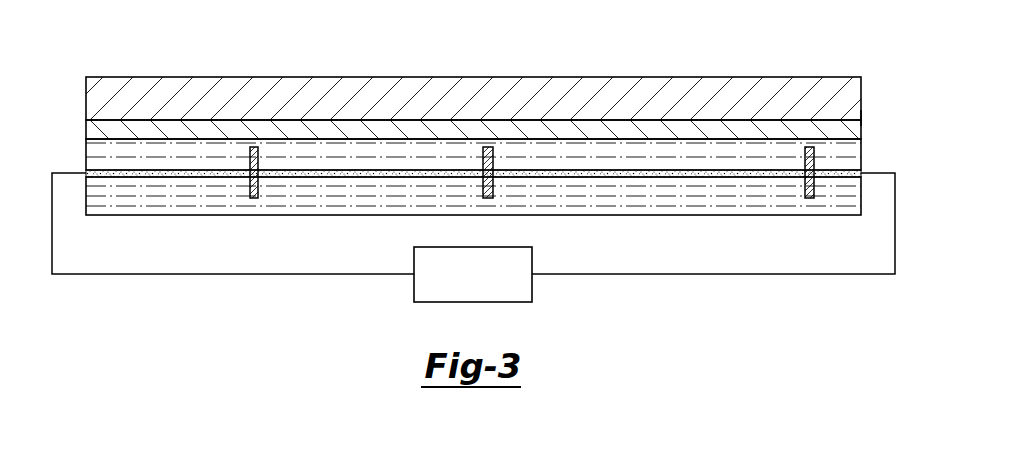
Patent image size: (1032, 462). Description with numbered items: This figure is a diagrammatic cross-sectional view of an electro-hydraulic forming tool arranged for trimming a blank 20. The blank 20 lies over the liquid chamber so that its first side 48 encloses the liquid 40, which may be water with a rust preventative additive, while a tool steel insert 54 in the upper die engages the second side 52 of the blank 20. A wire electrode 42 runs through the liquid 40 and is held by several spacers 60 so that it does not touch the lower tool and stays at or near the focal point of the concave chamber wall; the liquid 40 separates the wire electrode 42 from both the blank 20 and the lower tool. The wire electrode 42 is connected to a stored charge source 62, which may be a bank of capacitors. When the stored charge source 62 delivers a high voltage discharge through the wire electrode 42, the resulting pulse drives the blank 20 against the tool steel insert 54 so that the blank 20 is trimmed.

The tool steel insert 54 is at (96, 99).
The blank 20 is at (96, 132).
The second side of the blank 52 is at (850, 118).
The first side of the blank 48 is at (850, 140).
The wire electrode 42 is at (303, 178).
The liquid 40 is at (121, 196).
The spacers 60 is at (802, 184).
The stored charge source 62 is at (414, 285).